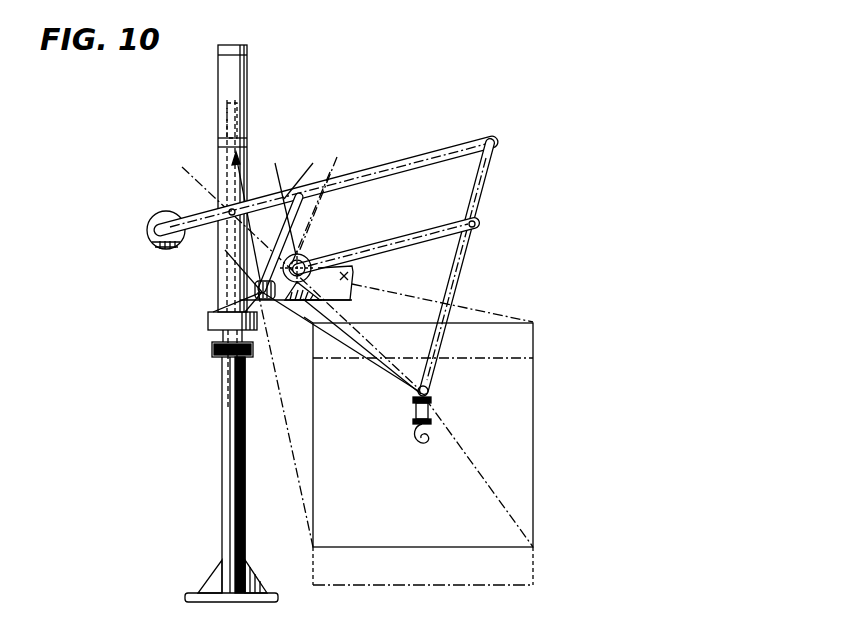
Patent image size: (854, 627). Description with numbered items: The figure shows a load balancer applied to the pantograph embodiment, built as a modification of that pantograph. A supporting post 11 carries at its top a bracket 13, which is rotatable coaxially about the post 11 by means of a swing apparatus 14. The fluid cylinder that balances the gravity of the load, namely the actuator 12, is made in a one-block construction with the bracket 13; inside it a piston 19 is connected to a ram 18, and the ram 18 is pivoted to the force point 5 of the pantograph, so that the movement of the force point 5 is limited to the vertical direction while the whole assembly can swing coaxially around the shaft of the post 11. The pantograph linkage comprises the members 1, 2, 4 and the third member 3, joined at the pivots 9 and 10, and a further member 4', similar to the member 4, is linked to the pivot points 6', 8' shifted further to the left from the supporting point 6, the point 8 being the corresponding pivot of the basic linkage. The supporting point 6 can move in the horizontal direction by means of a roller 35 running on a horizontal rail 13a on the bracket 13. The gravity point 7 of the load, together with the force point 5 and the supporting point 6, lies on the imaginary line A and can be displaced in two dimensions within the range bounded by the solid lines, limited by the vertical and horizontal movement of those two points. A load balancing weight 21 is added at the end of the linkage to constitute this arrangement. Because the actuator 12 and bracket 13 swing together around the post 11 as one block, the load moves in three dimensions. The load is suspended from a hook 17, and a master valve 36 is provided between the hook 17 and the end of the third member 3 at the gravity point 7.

The upper boom 1 is at (390, 158).
The lower boom 2 is at (405, 247).
The third member 3 is at (460, 293).
The member 4 is at (312, 230).
The member 4' is at (304, 168).
The force point 5 is at (226, 230).
The supporting point 6 is at (302, 315).
The pivot point 6' is at (220, 314).
The gravity point 7 is at (430, 393).
The link 8 is at (324, 195).
The pivot point 8' is at (279, 196).
The corner joint 9 is at (495, 137).
The joint 10 is at (478, 226).
The supporting post 11 is at (226, 535).
The actuator 12 is at (225, 75).
The bracket 13 is at (248, 278).
The horizontal rail 13a is at (330, 301).
The swing apparatus 14 is at (209, 333).
The hook 17 is at (418, 442).
The ram 18 is at (245, 127).
The piston 19 is at (228, 104).
The load balancing weight 21 is at (150, 248).
The roller 35 is at (312, 262).
The master valve 36 is at (412, 413).
The imaginary line A- A is at (346, 345).